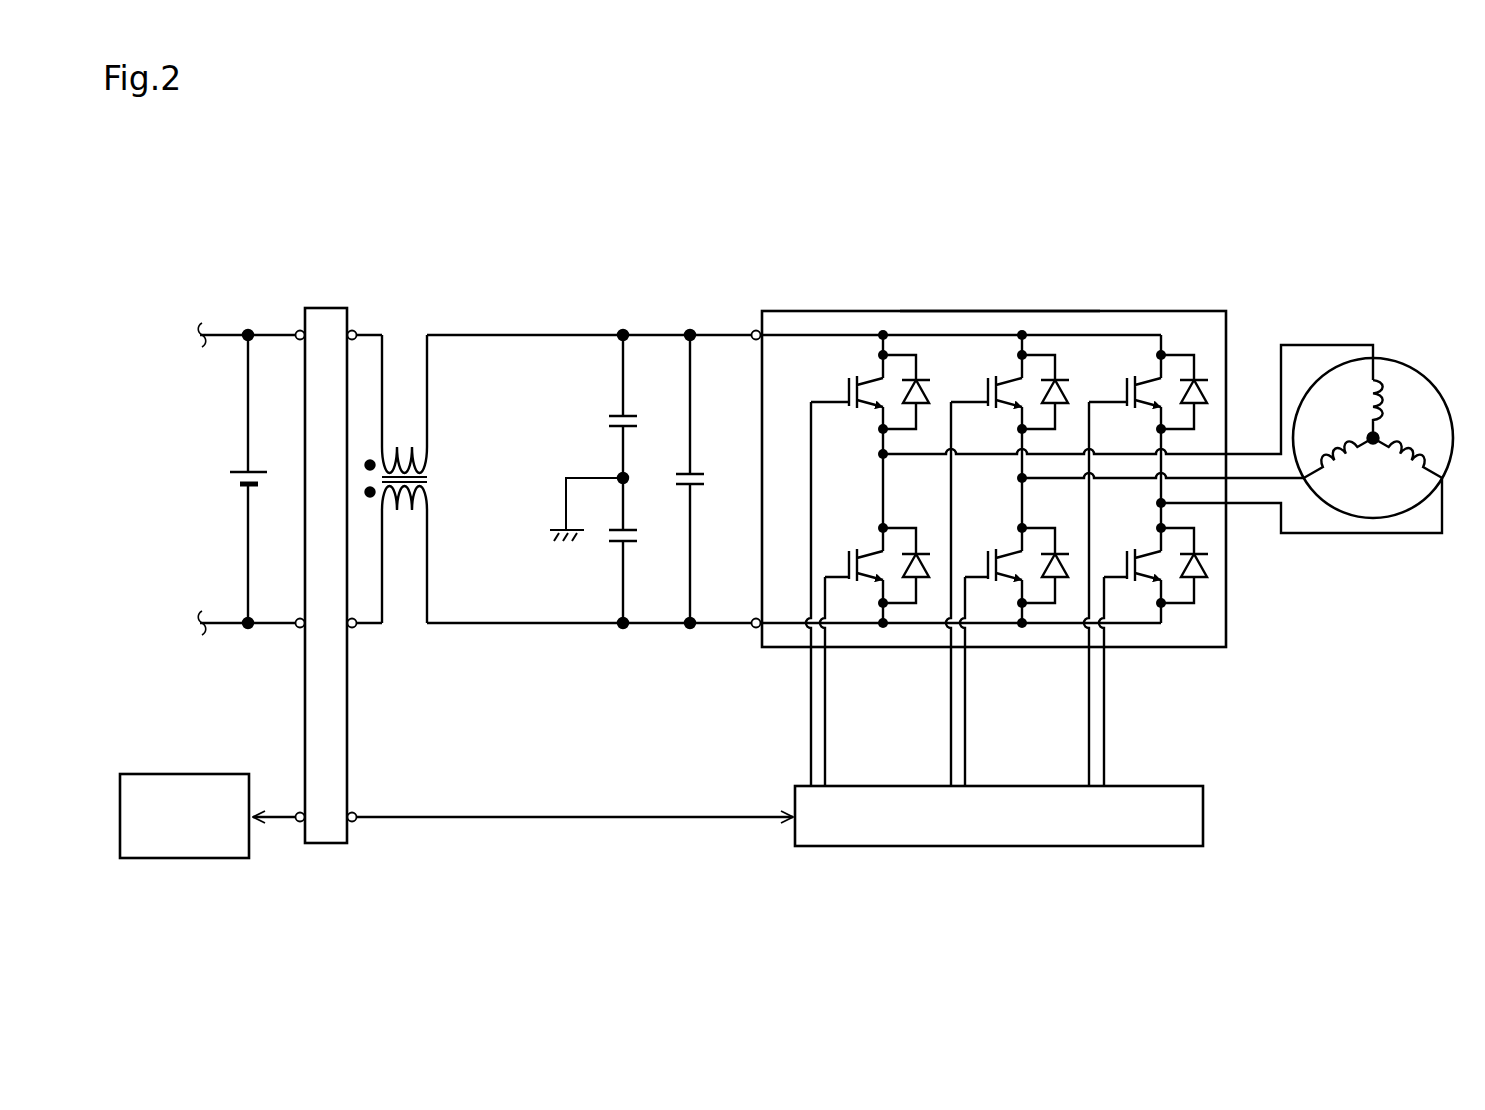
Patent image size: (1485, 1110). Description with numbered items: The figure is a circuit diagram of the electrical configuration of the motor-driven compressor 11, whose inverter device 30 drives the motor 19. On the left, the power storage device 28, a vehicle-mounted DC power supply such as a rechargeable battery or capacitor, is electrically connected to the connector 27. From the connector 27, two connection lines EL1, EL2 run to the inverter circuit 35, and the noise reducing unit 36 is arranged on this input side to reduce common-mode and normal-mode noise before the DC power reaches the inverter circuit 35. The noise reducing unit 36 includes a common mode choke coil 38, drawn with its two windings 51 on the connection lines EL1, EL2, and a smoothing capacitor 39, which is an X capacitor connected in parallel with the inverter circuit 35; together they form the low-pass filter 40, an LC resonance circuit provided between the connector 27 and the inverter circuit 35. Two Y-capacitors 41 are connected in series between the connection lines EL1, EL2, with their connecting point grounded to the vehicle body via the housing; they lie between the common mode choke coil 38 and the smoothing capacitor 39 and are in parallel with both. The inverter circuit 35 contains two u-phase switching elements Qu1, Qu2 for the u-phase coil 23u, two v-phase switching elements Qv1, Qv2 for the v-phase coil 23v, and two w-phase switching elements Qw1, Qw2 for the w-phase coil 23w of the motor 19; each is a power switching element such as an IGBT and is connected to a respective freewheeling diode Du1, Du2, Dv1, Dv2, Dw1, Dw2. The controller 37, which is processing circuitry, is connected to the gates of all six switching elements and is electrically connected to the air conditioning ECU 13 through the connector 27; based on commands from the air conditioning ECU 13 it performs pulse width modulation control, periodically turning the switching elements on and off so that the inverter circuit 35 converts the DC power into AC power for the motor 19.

The motor-driven compressor 11 is at (1330, 260).
The air conditioning ECU 13 is at (208, 773).
The motor 19 is at (1381, 410).
The u-phase coil 23u is at (1392, 400).
The v-phase coil 23v is at (1345, 470).
The w-phase coil 23w is at (1405, 460).
The connector 27 is at (328, 306).
The power storage device 28 is at (231, 470).
The inverter device 30 is at (1212, 290).
The inverter circuit 35 is at (993, 310).
The noise reducing unit 36 is at (661, 284).
The controller 37 is at (1183, 786).
The common mode choke coil 38 is at (426, 456).
The smoothing capacitor 39 is at (695, 472).
The low-pass filter 40 is at (724, 300).
The Y-capacitors 41 is at (628, 414).
The windings 51 is at (420, 452).
The connection line EL1 is at (594, 330).
The connection line EL2 is at (596, 626).
The u-phase switching element Qu1 is at (845, 395).
The u-phase switching element Qu2 is at (848, 565).
The v-phase switching element Qv1 is at (984, 395).
The v-phase switching element Qv2 is at (986, 565).
The w-phase switching element Qw1 is at (1124, 395).
The w-phase switching element Qw2 is at (1126, 565).
The freewheeling diode Du1 is at (922, 378).
The freewheeling diode Du2 is at (922, 555).
The freewheeling diode Dv1 is at (1063, 378).
The freewheeling diode Dv2 is at (1059, 555).
The freewheeling diode Dw1 is at (1207, 380).
The freewheeling diode Dw2 is at (1207, 567).